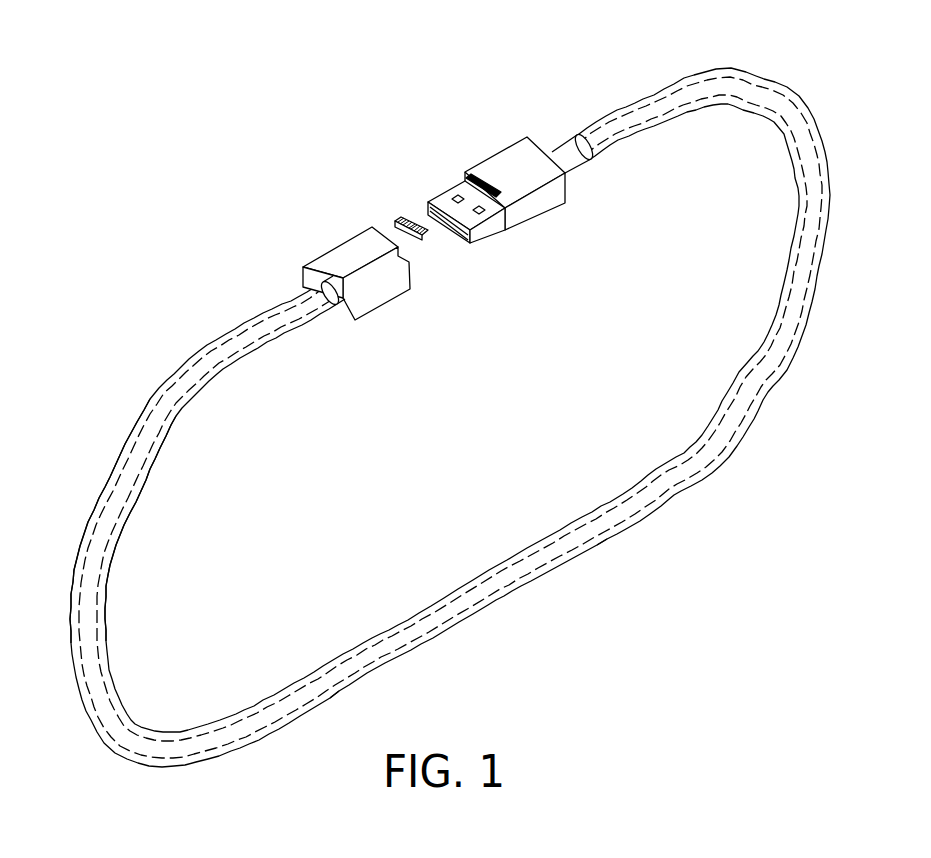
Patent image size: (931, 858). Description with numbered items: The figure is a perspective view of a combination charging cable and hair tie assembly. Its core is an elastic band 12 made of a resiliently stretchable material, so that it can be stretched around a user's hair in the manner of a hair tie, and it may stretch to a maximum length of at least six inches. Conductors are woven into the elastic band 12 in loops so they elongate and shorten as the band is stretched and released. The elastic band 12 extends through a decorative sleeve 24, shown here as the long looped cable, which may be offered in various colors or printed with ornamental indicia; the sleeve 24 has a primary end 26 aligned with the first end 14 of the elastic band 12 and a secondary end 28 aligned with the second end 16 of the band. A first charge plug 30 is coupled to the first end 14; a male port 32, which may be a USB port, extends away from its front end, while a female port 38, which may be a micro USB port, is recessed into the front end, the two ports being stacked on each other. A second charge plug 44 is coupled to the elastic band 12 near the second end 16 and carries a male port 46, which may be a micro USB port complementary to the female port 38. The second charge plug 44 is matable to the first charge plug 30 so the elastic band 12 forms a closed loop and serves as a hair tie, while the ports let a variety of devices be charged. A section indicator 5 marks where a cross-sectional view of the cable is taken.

The elastic band 12 is at (733, 430).
The decorative sleeve 24 is at (130, 443).
The section line for FIG. 5 is at (605, 517).
The first end 14 is at (490, 164).
The primary end 26 is at (567, 147).
The first charge plug 30 is at (537, 212).
The male port 32 is at (487, 233).
The female port 38 is at (455, 174).
The second end 16 is at (321, 245).
The secondary end 28 is at (298, 284).
The second charge plug 44 is at (382, 294).
The male port 46 is at (395, 222).